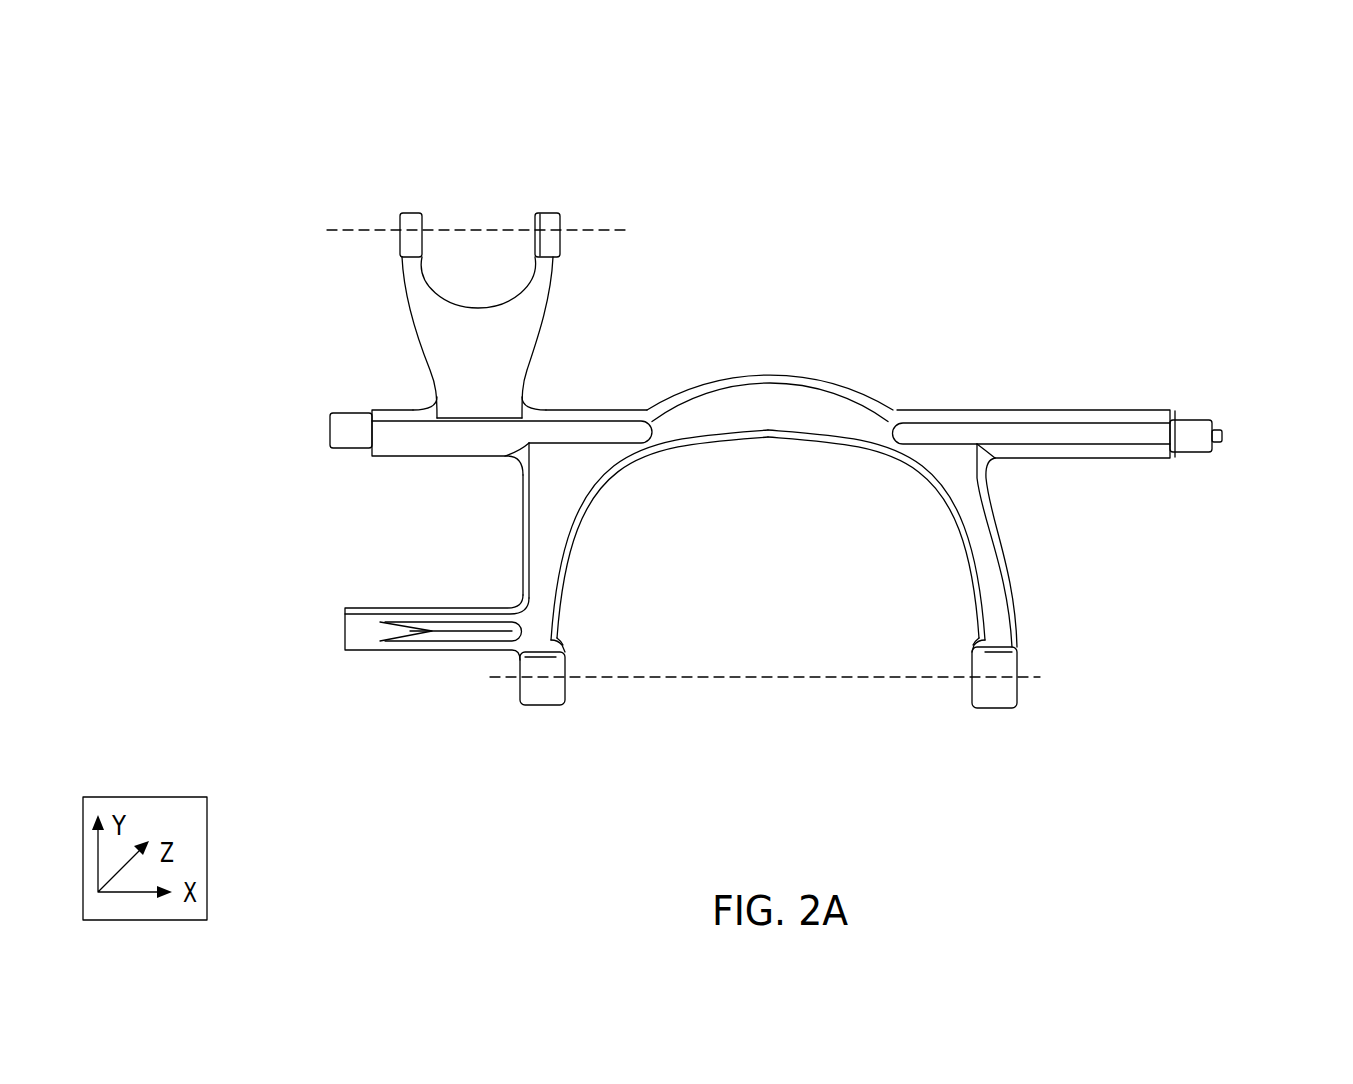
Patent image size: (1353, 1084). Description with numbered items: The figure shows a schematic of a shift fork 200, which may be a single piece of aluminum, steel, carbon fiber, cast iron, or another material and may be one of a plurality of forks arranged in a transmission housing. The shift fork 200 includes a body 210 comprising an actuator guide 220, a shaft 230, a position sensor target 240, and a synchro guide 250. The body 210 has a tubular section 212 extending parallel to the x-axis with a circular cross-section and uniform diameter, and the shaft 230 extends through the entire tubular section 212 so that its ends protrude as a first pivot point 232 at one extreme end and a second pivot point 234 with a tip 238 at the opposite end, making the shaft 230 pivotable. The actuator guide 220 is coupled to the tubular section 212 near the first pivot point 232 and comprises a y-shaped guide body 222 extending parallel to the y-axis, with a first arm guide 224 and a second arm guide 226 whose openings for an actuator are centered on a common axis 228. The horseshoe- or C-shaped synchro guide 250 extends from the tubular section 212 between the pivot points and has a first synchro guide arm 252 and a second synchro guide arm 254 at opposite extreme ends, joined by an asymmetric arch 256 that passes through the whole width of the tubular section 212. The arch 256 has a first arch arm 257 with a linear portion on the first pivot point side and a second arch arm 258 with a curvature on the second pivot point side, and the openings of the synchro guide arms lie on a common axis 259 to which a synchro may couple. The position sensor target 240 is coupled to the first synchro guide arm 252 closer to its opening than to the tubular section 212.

The shift fork 200 is at (1247, 159).
The body 210 is at (979, 264).
The tubular section 212 is at (1003, 412).
The actuator guide 220 is at (425, 191).
The guide body 222 is at (513, 378).
The first arm guide 224 is at (403, 257).
The second arm guide 226 is at (556, 258).
The common axis 228 is at (357, 228).
The shaft 230 is at (323, 391).
The first pivot point 232 is at (328, 430).
The second pivot point 234 is at (1203, 453).
The tip 238 is at (1223, 433).
The position sensor target 240 is at (329, 636).
The synchro guide 250 is at (605, 739).
The first synchro guide arm 252 is at (545, 707).
The second synchro guide arm 254 is at (997, 710).
The arch 256 is at (757, 376).
The first arch arm 257 is at (527, 529).
The second arch arm 258 is at (1003, 541).
The common axis 259 is at (915, 675).